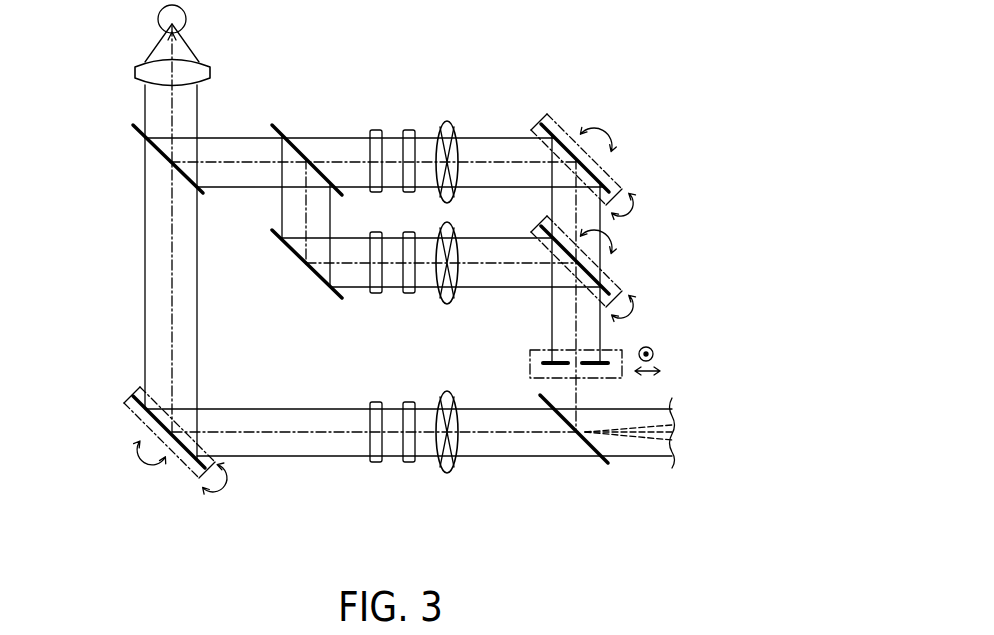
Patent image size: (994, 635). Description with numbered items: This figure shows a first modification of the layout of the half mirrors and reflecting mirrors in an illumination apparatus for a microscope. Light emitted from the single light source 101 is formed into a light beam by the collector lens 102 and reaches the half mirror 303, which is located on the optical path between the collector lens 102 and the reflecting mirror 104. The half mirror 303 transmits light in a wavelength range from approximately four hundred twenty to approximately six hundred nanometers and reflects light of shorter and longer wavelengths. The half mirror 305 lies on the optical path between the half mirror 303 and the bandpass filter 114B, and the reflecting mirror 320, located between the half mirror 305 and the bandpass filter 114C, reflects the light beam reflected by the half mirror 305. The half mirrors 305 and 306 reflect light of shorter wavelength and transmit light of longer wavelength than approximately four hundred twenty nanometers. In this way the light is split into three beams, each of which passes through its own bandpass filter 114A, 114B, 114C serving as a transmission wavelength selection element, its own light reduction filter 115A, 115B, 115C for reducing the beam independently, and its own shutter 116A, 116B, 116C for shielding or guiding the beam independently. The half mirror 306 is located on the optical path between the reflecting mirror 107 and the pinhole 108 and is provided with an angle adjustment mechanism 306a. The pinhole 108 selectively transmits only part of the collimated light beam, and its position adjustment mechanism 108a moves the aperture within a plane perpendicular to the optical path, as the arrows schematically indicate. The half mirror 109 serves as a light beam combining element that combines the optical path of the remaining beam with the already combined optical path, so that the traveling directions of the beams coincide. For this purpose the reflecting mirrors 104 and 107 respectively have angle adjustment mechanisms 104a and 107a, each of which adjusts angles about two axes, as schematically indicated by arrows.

The light source 101 is at (157, 18).
The collector lens 102 is at (135, 70).
The half mirror 303 is at (138, 135).
The half mirror 305 is at (280, 127).
The reflecting mirror 320 is at (312, 273).
The bandpass filter 114A is at (375, 464).
The bandpass filter 114B is at (375, 130).
The bandpass filter 114C is at (375, 295).
The light reduction filter 115A is at (410, 464).
The light reduction filter 115B is at (408, 130).
The light reduction filter 115C is at (407, 297).
The shutter 116A is at (452, 468).
The shutter 116B is at (452, 126).
The shutter 116C is at (457, 296).
The reflecting mirror 107 is at (551, 120).
The angle adjustment mechanism 107a is at (612, 178).
The half mirror 306 is at (538, 227).
The angle adjustment mechanism 306a is at (614, 280).
The pinhole 108 is at (545, 361).
The position adjustment mechanism 108a is at (616, 348).
The half mirror 109 is at (600, 462).
The reflecting mirror 104 is at (137, 408).
The angle adjustment mechanism 104a is at (190, 470).